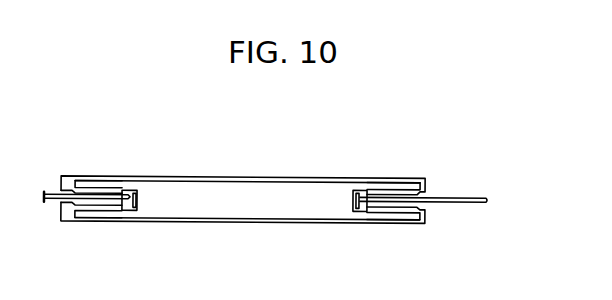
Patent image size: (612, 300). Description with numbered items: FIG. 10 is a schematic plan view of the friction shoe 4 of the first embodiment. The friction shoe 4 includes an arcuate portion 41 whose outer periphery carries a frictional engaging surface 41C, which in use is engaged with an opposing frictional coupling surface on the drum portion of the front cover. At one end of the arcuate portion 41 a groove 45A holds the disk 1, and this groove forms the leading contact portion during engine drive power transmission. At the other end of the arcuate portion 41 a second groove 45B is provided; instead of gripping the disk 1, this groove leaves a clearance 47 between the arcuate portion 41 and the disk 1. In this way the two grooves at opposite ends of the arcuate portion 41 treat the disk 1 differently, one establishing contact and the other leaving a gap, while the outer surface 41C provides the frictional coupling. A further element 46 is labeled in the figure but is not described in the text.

The disk 1 is at (54, 197).
The friction shoe 4 is at (210, 178).
The arcuate portion 41 is at (267, 223).
The frictional engaging surface 41C is at (237, 190).
The groove 45A is at (367, 191).
The groove 45B is at (131, 203).
The right terminal member 46 is at (358, 211).
The clearance 47 is at (124, 212).